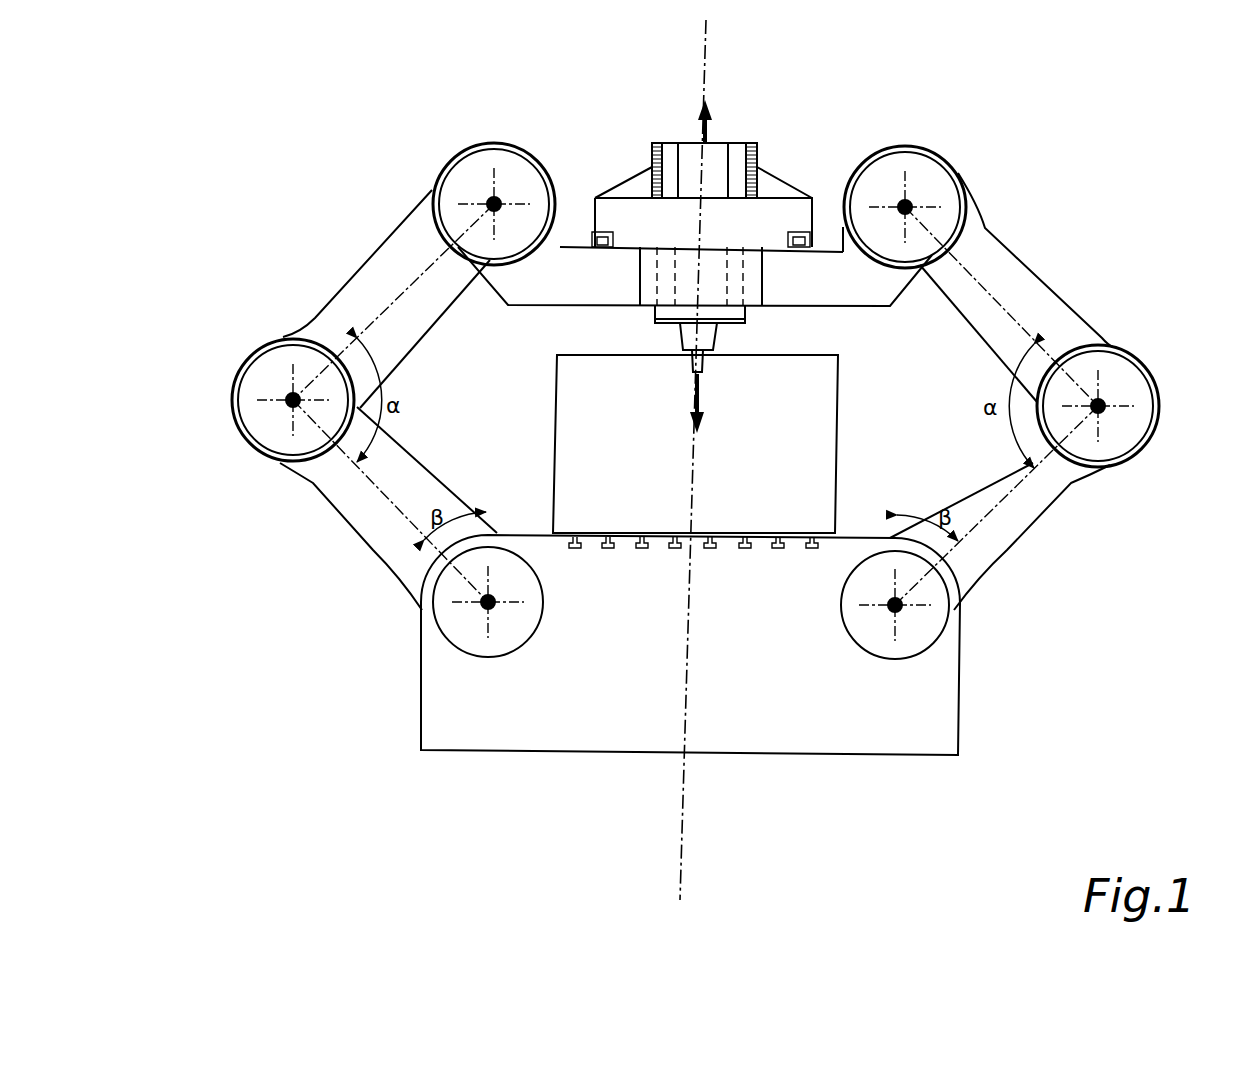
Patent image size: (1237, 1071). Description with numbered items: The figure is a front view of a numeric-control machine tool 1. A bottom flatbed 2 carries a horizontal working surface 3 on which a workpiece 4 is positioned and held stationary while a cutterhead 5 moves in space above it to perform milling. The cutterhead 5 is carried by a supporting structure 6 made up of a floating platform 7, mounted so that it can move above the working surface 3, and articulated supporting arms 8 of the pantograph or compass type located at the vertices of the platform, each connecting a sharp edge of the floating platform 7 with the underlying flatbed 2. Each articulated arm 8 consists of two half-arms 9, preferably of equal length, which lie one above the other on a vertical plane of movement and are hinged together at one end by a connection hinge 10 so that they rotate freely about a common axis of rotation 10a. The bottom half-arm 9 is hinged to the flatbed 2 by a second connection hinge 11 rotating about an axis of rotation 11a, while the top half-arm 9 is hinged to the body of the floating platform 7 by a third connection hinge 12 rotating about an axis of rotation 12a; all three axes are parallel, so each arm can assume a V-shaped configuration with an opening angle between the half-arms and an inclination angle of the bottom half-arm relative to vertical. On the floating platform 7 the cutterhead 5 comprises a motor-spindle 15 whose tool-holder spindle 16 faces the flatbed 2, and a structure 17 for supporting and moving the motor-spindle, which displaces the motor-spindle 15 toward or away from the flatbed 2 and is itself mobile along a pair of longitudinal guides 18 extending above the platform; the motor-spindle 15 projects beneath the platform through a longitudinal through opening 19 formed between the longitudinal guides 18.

The machine tool 1 is at (1115, 203).
The bottom flatbed 2 is at (830, 742).
The horizontal working surface 3 is at (642, 533).
The workpiece 4 is at (828, 410).
The cutterhead 5 is at (740, 140).
The supporting structure 6 is at (1066, 268).
The floating platform 7 is at (580, 263).
The articulated supporting arm 8 is at (247, 345).
The half-arm 9 is at (373, 288).
The connection hinge 10 is at (258, 445).
The axis of rotation 10a is at (293, 400).
The second connection hinge 11 is at (457, 622).
The axis of rotation 11a is at (488, 602).
The third connection hinge 12 is at (440, 185).
The axis of rotation 12a is at (494, 204).
The motor-spindle 15 is at (683, 155).
The tool-holder spindle 16 is at (680, 336).
The structure for supporting and moving the motor-spindle 17 is at (758, 215).
The longitudinal guides 18 is at (812, 240).
The longitudinal through opening 19 is at (752, 292).